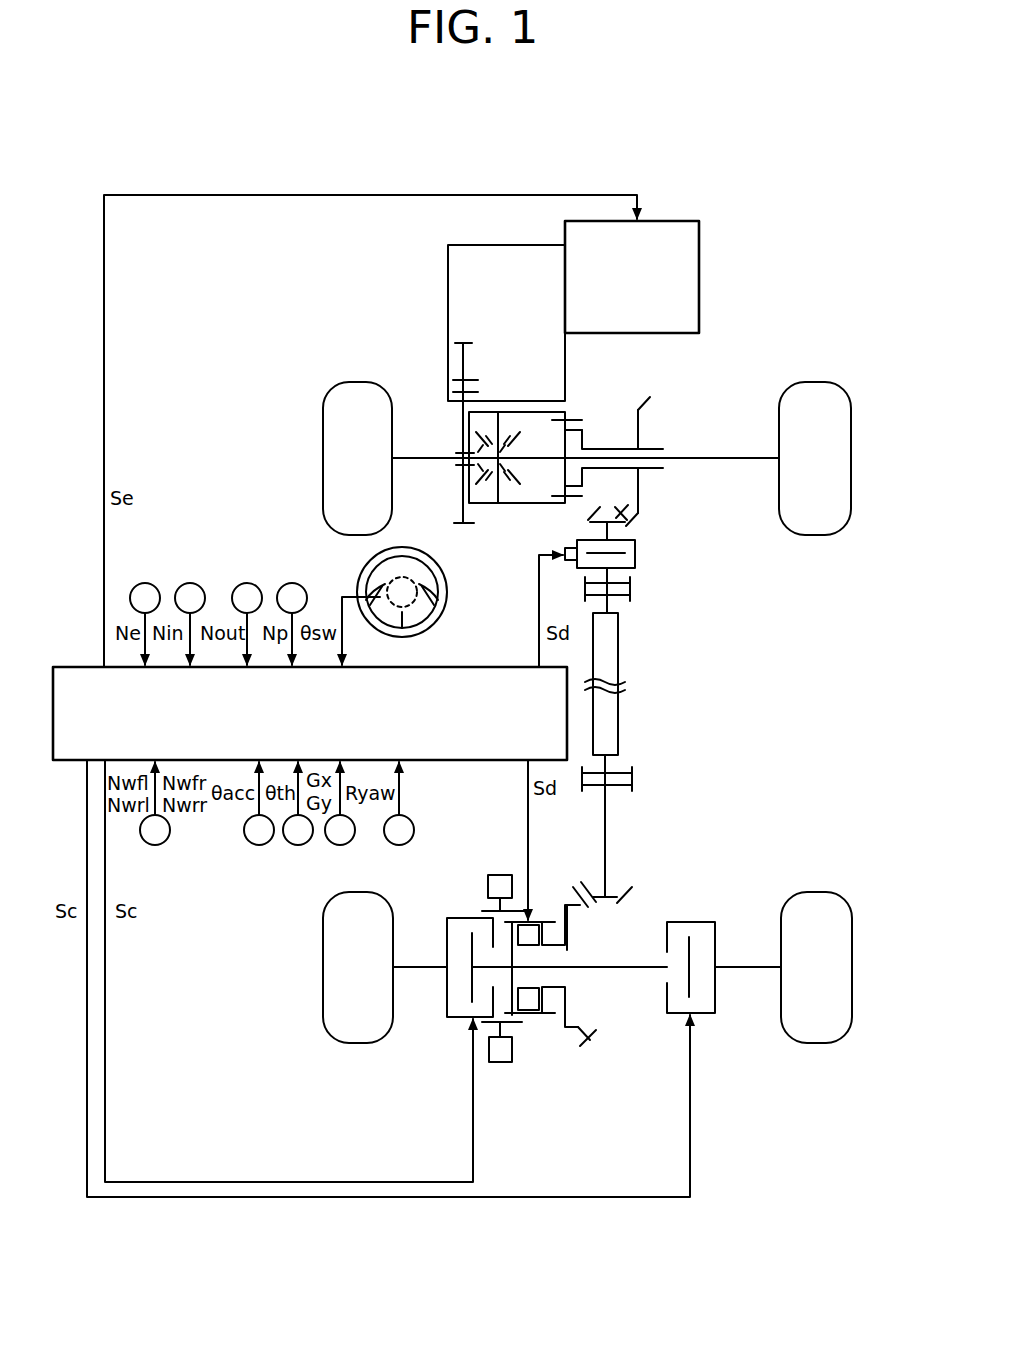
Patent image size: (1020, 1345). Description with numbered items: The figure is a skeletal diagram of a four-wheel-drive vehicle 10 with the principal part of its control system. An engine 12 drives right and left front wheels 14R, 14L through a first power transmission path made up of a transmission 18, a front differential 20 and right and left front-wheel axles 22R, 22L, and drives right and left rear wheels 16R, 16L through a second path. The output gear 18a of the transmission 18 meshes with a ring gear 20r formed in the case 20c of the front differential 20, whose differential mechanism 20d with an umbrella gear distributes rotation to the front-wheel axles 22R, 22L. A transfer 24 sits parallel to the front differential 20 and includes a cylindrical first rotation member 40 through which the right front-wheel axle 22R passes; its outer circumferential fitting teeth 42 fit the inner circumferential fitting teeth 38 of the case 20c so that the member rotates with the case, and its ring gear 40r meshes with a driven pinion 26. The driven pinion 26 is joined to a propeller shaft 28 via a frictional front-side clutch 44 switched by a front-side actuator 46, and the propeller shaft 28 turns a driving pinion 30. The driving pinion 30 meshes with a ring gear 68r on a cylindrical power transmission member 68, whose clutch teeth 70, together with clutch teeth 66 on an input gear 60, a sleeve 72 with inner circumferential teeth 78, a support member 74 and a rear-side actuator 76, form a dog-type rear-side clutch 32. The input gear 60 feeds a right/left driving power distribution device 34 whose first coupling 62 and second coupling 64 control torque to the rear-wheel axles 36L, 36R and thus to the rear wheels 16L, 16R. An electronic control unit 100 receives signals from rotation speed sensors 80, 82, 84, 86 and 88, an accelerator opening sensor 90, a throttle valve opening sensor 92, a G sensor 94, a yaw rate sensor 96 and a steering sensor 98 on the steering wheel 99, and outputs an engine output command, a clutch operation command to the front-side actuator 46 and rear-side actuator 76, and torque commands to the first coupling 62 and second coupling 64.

The four-wheel-drive vehicle 10 is at (748, 170).
The engine 12 is at (655, 237).
The left front wheel 14L is at (357, 386).
The right front wheel 14R is at (817, 386).
The left rear wheel 16L is at (357, 1044).
The right rear wheel 16R is at (822, 1044).
The transmission 18 is at (503, 262).
The output gear 18a is at (458, 384).
The front differential 20 is at (513, 535).
The case 20c is at (512, 506).
The differential mechanism 20d is at (462, 520).
The ring gear 20r is at (445, 556).
The left front-wheel axle 22L is at (422, 462).
The right front-wheel axle 22R is at (755, 462).
The transfer 24 is at (670, 516).
The driven pinion 26 is at (612, 540).
The propeller shaft 28 is at (610, 705).
The driving pinion 30 is at (607, 855).
The rear-side clutch 32 is at (523, 866).
The right/left driving power distribution device 34 is at (424, 1099).
The left rear-wheel axle 36L is at (418, 970).
The right rear-wheel axle 36R is at (750, 970).
The inner circumferential fitting teeth 38 is at (588, 428).
The first rotation member 40 is at (606, 448).
The ring gear 40r is at (625, 516).
The outer circumferential fitting teeth 42 is at (554, 422).
The front-side clutch 44 is at (645, 583).
The front-side actuator 46 is at (571, 564).
The input gear 60 is at (518, 982).
The first coupling 62 is at (463, 1024).
The second coupling 64 is at (678, 1024).
The clutch teeth 66 is at (523, 920).
The power transmission member 68 is at (578, 924).
The ring gear 68r is at (579, 888).
The clutch teeth 70 is at (549, 918).
The sleeve 72 is at (490, 906).
The support member 74 is at (502, 1064).
The rear-side actuator 76 is at (530, 1012).
The inner circumferential teeth 78 is at (524, 1014).
The rotation speed sensor 80 is at (147, 583).
The rotation speed sensor 82 is at (190, 583).
The rotation speed sensor 84 is at (249, 583).
The rotation speed sensor 86 is at (294, 583).
The rotation speed sensor 88 is at (156, 845).
The accelerator opening sensor 90 is at (260, 845).
The throttle valve opening sensor 92 is at (299, 845).
The G sensor 94 is at (341, 845).
The yaw rate sensor 96 is at (400, 845).
The steering sensor 98 is at (395, 636).
The steering wheel 99 is at (412, 608).
The electronic control unit 100 is at (462, 665).